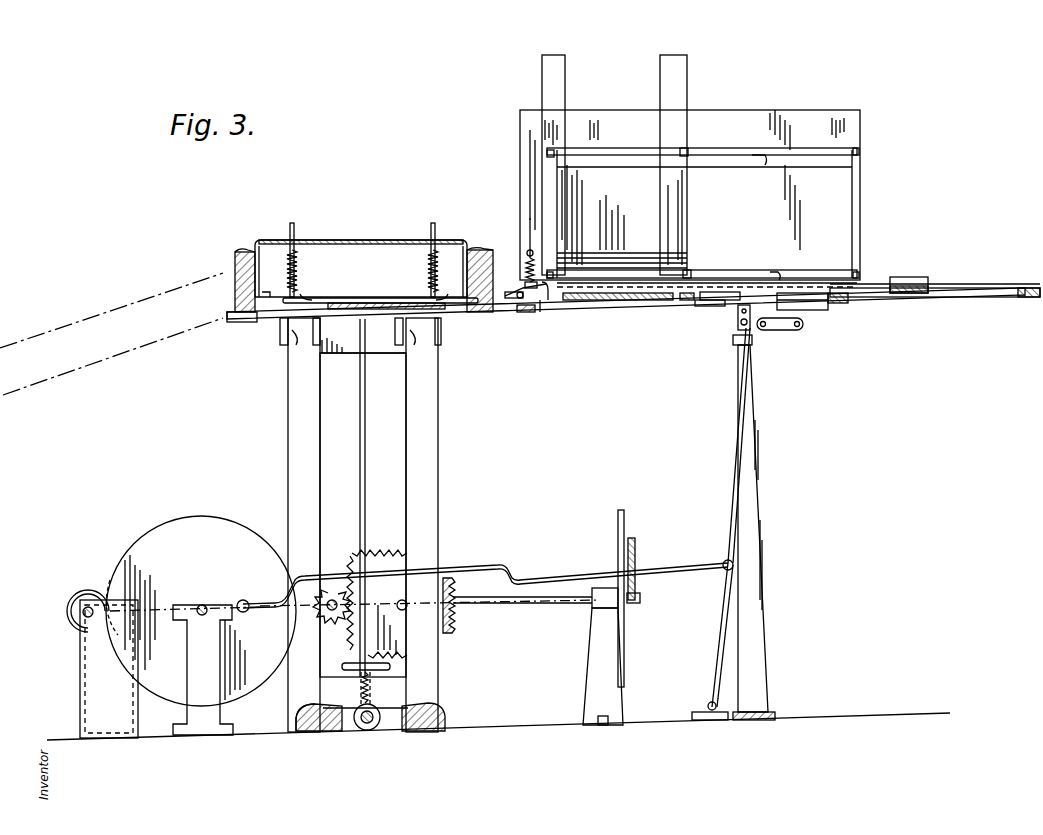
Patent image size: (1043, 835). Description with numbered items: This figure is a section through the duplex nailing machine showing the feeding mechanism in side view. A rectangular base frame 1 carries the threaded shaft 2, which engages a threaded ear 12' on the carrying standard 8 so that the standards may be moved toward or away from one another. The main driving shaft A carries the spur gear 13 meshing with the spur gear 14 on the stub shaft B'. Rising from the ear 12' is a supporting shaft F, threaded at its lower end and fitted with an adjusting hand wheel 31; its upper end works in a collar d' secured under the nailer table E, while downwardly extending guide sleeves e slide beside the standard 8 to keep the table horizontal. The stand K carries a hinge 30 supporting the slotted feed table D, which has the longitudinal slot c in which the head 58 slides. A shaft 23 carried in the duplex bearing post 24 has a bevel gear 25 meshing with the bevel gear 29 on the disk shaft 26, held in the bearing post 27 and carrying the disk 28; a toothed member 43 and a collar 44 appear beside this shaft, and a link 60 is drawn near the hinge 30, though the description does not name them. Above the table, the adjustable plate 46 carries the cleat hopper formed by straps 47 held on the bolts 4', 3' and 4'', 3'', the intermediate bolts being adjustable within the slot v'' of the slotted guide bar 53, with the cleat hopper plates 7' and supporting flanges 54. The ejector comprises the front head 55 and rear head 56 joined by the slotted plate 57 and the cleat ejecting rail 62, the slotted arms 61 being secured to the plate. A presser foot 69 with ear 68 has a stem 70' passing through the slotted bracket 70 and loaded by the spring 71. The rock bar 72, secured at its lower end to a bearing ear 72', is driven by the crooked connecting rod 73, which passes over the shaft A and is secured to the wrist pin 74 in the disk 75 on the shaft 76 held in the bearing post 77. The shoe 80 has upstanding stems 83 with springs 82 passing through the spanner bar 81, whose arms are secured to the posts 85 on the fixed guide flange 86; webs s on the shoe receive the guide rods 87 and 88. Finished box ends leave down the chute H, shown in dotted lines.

The rectangular base frame 1 is at (322, 731).
The threaded shaft 2 is at (367, 724).
The bolt 3' is at (717, 256).
The bolt 3'' is at (701, 256).
The bolt 4' is at (683, 143).
The bolt 4'' is at (659, 140).
The cleat hopper plate 7' is at (614, 165).
The carrying standard 8 is at (363, 525).
The threaded ear 12' is at (355, 734).
The spur gear 13 is at (335, 622).
The spur gear 14 is at (382, 551).
The shaft 23 is at (88, 606).
The duplex bearing post 24 is at (109, 669).
The bevel gear 25 is at (67, 609).
The disk shaft 26 is at (552, 608).
The bearing post 27 is at (597, 668).
The disk 28 is at (622, 510).
The bevel gear 29 is at (110, 580).
The hinge 30 is at (738, 322).
The adjusting hand wheel 31 is at (380, 670).
The gear 43 is at (636, 540).
The collar 44 is at (641, 597).
The adjustable plate 46 is at (770, 118).
The straps 47 is at (545, 176).
The slotted guide bar 53 is at (726, 148).
The supporting flange 54 is at (850, 302).
The front head 55 is at (680, 306).
The rear head 56 is at (935, 297).
The slotted plate 57 is at (792, 293).
The head 58 is at (820, 310).
The link 60 is at (782, 330).
The slotted arms 61 is at (885, 275).
The cleat ejecting rail 62 is at (925, 277).
The ear 68 is at (549, 300).
The presser foot 69 is at (518, 292).
The slotted bracket 70 is at (570, 252).
The stem 70' is at (513, 231).
The spring 71 is at (542, 312).
The rock bar 72 is at (758, 517).
The bearing ear 72' is at (703, 727).
The crooked connecting rod 73 is at (541, 578).
The wrist pin 74 is at (243, 600).
The disk 75 is at (201, 611).
The shaft 76 is at (202, 604).
The bearing post 77 is at (203, 670).
The shoe 80 is at (282, 298).
The spanner bar 81 is at (380, 240).
The spring 82 is at (298, 272).
The upstanding stem 83 is at (293, 223).
The post 85 is at (238, 258).
The fixed guide flange 86 is at (248, 322).
The guide rod 87 is at (383, 290).
The guide rod 88 is at (330, 298).
The main driving shaft A is at (332, 598).
The stub shaft B' is at (413, 622).
The grating C is at (648, 250).
The slotted feed table D is at (530, 313).
The nailer table E is at (478, 319).
The supporting shaft F is at (362, 425).
The chute H is at (48, 328).
The stand K is at (754, 527).
The slab S is at (400, 303).
The longitudinally extending slot c is at (643, 301).
The collar d' is at (363, 340).
The guide sleeve e is at (360, 339).
The web s is at (512, 305).
The slot v'' is at (778, 266).
The hook v''' is at (753, 168).